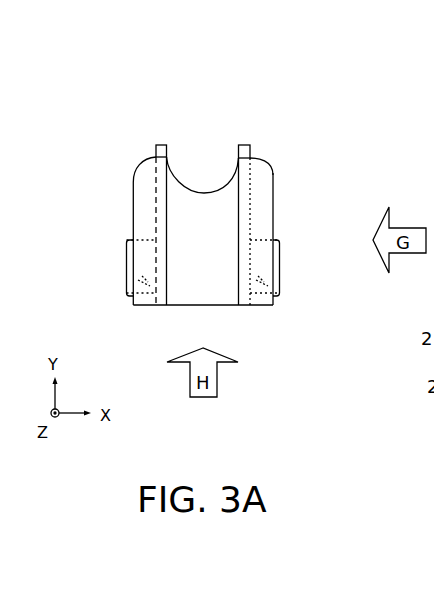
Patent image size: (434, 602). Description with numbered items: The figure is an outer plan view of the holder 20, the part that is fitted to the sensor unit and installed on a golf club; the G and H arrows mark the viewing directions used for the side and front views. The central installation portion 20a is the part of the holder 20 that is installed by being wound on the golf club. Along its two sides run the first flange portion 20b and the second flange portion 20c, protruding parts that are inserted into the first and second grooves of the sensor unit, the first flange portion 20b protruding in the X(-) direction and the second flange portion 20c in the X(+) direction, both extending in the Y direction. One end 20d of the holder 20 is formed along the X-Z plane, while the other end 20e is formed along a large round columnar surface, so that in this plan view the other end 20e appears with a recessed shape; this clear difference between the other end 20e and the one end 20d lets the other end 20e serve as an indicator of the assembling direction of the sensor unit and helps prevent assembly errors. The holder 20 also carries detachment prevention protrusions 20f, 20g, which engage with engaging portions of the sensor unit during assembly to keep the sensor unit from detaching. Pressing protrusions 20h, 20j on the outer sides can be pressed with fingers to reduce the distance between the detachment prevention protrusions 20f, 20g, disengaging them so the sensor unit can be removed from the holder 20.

The holder 20 is at (221, 62).
The installation portion 20a is at (193, 275).
The first flange portion 20b is at (142, 218).
The second flange portion 20c is at (267, 219).
The one end 20d is at (182, 307).
The other end 20e is at (217, 183).
The detachment prevention protrusion 20f is at (125, 288).
The detachment prevention protrusion 20g is at (268, 293).
The pressing protrusion 20h is at (127, 257).
The pressing protrusion 20j is at (279, 266).